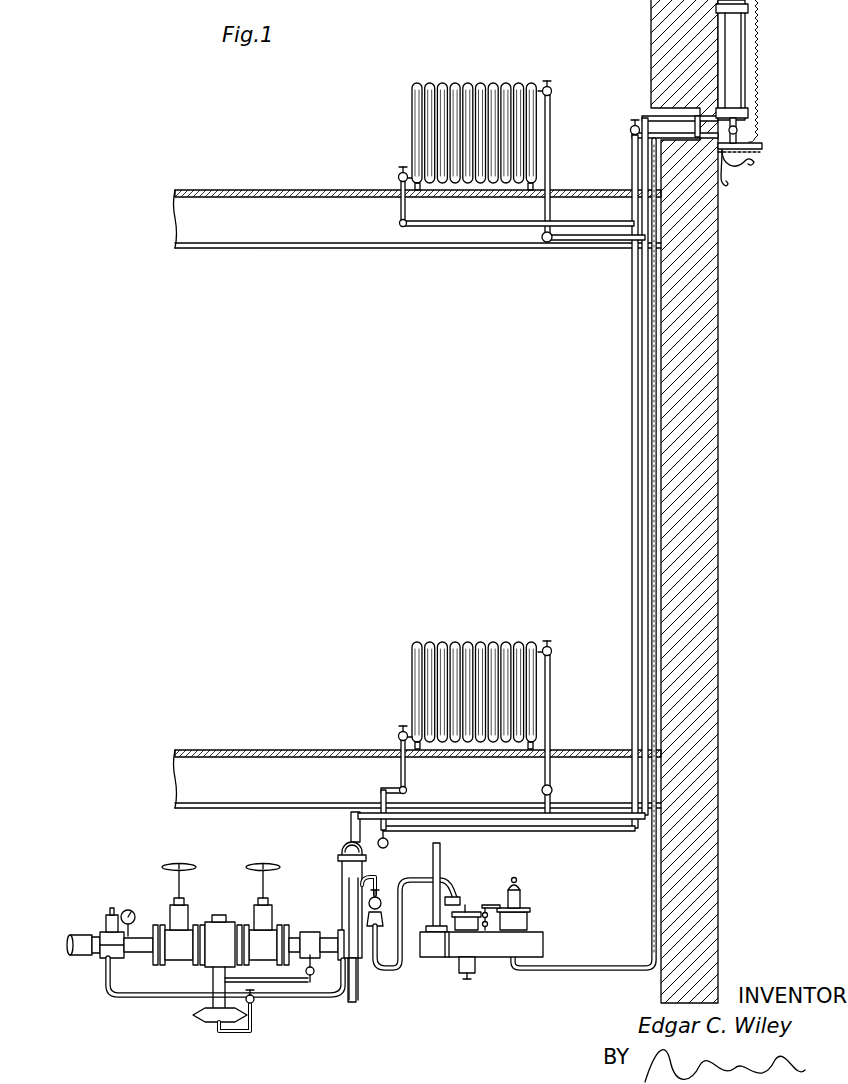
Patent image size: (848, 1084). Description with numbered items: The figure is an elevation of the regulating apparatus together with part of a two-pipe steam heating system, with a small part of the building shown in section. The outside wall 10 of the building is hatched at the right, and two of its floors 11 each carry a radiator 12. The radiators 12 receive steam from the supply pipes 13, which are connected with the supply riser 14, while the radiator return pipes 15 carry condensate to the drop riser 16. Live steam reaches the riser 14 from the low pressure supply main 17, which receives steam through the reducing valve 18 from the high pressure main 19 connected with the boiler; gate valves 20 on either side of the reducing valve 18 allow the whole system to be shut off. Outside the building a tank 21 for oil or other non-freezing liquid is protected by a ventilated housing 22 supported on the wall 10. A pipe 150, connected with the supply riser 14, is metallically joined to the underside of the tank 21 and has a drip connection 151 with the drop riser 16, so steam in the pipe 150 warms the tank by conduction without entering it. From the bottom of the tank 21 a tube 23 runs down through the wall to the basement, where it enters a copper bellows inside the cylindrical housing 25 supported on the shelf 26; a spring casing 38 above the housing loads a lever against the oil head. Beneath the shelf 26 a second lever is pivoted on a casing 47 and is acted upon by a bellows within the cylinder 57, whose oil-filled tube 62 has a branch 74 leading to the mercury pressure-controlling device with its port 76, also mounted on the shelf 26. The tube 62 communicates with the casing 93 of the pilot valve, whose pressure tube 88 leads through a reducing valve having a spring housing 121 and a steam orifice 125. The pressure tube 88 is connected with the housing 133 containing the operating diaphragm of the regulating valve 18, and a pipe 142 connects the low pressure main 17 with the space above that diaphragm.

The outside wall 10 is at (706, 372).
The floors 11 is at (318, 192).
The radiator 12 is at (470, 84).
The supply pipes 13 is at (550, 150).
The supply riser 14 is at (642, 488).
The radiator return pipes 15 is at (440, 228).
The drop riser 16 is at (632, 425).
The low pressure supply main 17 is at (342, 872).
The reducing valve 18 is at (220, 934).
The high pressure main 19 is at (92, 936).
The gate valves 20 is at (177, 932).
The tank 21 is at (740, 62).
The ventilated housing 22 is at (745, 128).
The tube 23 is at (732, 152).
The cylindrical housing 25 is at (528, 920).
The shelf 26 is at (545, 946).
The casing 38 is at (521, 893).
The casing 47 is at (468, 975).
The cylinder 57 is at (473, 913).
The tube 62 is at (467, 905).
The branch 74 is at (447, 945).
The port 76 is at (433, 860).
The pressure tube 88 is at (309, 997).
The casing 93 is at (360, 985).
The housing 121 is at (108, 930).
The orifice 125 is at (126, 910).
The housing 133 is at (200, 1018).
The pipe 142 is at (278, 985).
The pipe 150 is at (700, 116).
The drip connection 151 is at (668, 133).